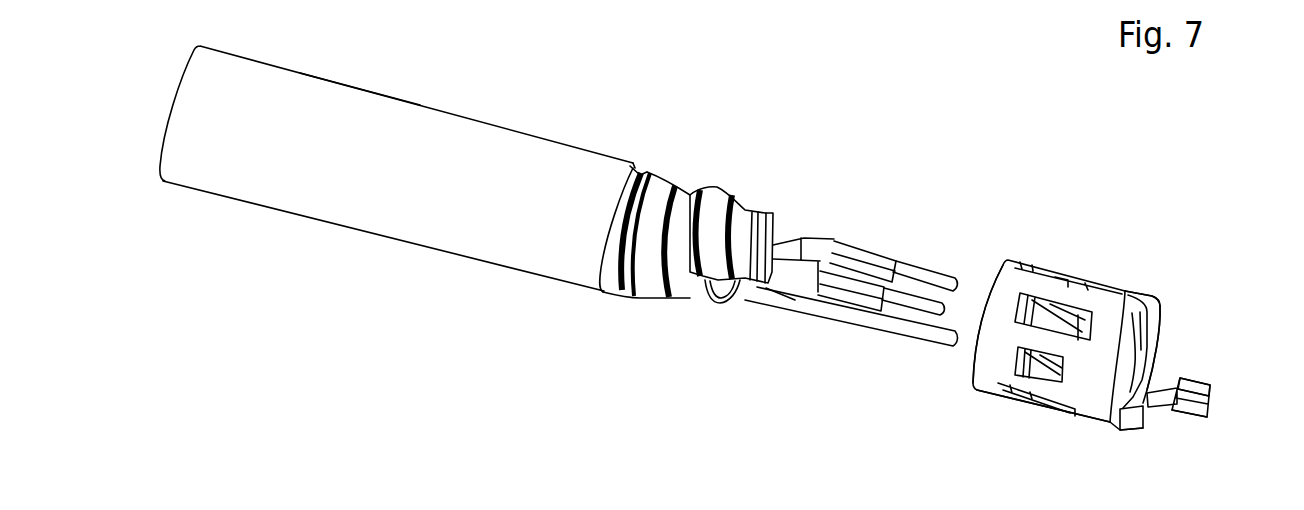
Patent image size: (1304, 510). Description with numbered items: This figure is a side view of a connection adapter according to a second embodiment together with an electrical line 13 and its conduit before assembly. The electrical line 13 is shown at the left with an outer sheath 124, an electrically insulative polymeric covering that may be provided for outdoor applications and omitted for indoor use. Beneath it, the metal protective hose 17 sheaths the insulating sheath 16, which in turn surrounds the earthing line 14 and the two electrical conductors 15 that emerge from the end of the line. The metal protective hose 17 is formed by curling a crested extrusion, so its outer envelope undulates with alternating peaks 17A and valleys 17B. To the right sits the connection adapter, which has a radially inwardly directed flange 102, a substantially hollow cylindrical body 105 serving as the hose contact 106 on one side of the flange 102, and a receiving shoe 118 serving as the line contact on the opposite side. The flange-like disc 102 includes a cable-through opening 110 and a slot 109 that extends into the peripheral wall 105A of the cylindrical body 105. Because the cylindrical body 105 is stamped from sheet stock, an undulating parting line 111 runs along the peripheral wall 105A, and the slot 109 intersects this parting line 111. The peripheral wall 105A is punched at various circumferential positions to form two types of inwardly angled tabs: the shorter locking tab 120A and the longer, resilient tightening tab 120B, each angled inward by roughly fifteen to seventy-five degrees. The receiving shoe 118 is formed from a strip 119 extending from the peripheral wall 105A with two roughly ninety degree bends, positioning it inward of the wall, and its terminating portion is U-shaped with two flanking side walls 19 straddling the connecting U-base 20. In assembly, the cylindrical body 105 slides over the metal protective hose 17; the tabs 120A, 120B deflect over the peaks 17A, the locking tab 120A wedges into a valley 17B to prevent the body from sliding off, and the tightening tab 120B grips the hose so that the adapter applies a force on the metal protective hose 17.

The electrical line 13 is at (443, 108).
The outer sheath 124 is at (525, 136).
The metal protective hose 17 is at (727, 192).
The peaks 17A is at (640, 298).
The valleys 17B is at (692, 193).
The insulating sheath 16 is at (722, 304).
The earthing line 14 is at (858, 322).
The electrical conductors 15 is at (927, 286).
The radially inwardly directed flange 102 is at (1156, 303).
The hose contact 106 is at (991, 280).
The parting line 111 is at (1112, 283).
The slot 109 is at (1143, 295).
The cable-through opening 110 is at (1165, 315).
The tightening tab 120B is at (1047, 300).
The locking tab 120A is at (1032, 360).
The cylindrical body 105 is at (986, 391).
The peripheral wall 105A is at (1100, 411).
The strip 119 is at (1135, 430).
The receiving shoe 118 is at (1190, 374).
The flanking side walls 19 is at (1212, 389).
The connecting U-base 20 is at (1207, 419).